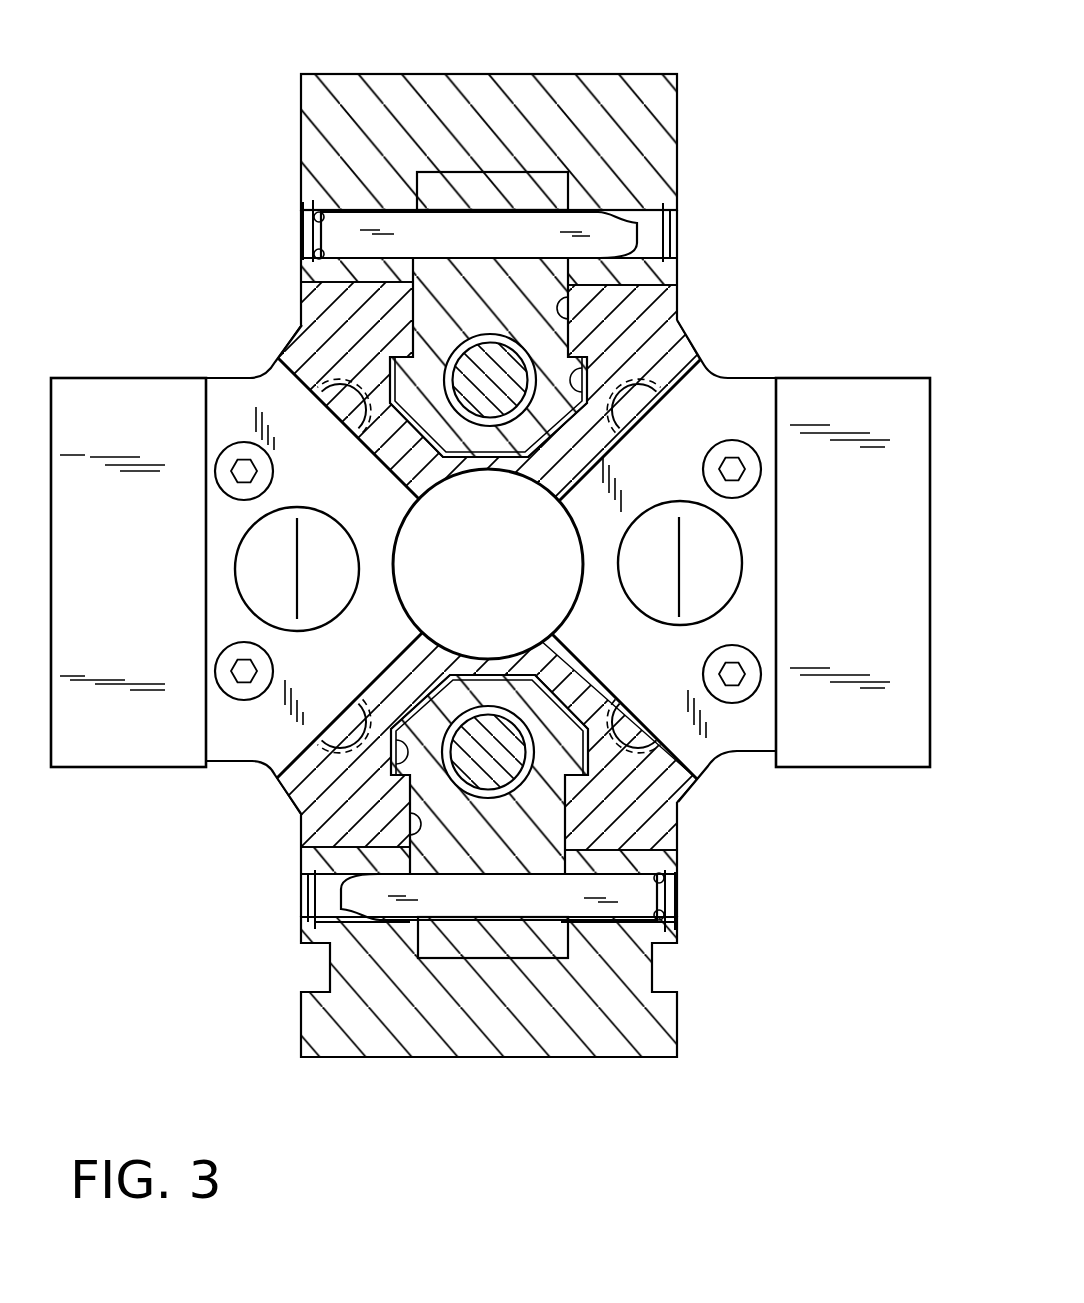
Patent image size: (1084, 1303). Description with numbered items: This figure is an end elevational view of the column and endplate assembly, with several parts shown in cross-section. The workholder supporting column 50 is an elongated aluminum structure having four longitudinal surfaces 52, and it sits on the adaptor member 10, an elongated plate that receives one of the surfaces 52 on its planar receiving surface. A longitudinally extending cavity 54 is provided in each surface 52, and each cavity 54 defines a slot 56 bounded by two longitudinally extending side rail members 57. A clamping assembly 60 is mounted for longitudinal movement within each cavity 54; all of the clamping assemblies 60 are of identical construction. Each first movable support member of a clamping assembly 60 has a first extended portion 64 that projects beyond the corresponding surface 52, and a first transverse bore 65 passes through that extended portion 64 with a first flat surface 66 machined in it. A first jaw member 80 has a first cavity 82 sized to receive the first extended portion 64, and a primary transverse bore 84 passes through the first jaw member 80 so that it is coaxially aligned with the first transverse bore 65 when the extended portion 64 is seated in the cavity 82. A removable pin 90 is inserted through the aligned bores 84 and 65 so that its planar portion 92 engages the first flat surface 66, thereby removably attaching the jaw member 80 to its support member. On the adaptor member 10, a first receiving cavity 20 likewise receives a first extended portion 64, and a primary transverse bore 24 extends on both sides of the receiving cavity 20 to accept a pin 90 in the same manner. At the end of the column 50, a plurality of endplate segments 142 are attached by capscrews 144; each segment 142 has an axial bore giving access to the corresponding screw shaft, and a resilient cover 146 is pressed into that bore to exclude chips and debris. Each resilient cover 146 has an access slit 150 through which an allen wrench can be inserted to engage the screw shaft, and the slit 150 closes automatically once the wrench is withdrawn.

The adaptor member 10 is at (657, 1030).
The first receiving cavity 20 is at (560, 1040).
The primary transverse bore 24 is at (302, 905).
The workholder supporting column 50 is at (692, 792).
The longitudinal surfaces 52 is at (302, 278).
The longitudinally extending cavity 54 is at (593, 322).
The slot 56 is at (675, 313).
The side rail members 57 is at (330, 212).
The clamping assembly 60 is at (505, 168).
The first extended portion 64 is at (470, 185).
The first transverse bore 65 is at (305, 325).
The first flat surface 66 is at (567, 172).
The first jaw member 80 is at (657, 107).
The first cavity 82 is at (430, 176).
The primary transverse bore 84 is at (678, 212).
The removable pin 90 is at (500, 249).
The planar portion 92 is at (603, 198).
The endplate segments 142 is at (357, 673).
The capscrews 144 is at (226, 478).
The resilient cover 146 is at (275, 608).
The access slit 150 is at (297, 584).